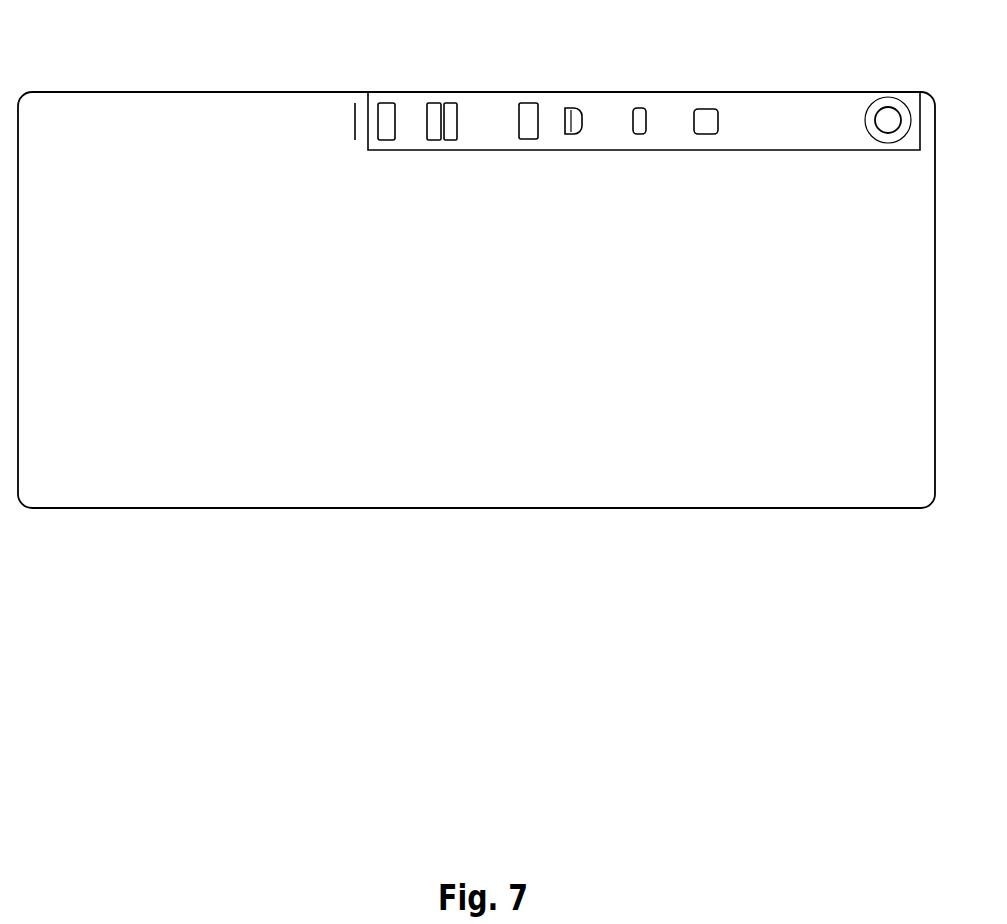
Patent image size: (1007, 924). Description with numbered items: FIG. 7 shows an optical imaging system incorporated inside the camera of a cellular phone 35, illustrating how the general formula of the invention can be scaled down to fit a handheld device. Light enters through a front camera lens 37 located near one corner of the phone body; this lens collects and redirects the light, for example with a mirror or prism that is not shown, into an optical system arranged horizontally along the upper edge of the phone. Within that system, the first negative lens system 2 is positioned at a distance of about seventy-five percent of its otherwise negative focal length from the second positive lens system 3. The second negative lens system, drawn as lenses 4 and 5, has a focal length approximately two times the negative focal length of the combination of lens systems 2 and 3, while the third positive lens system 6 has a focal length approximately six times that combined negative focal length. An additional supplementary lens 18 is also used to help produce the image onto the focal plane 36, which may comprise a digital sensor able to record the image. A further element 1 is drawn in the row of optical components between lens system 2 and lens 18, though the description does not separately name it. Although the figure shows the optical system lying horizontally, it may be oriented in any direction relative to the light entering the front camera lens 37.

The cellular phone 35 is at (449, 329).
The focal plane 36 is at (353, 128).
The third positive lens system 6 is at (387, 117).
The lens 4 is at (433, 112).
The lens 5 is at (450, 112).
The second positive lens system 3 is at (530, 115).
The first negative lens system 2 is at (575, 118).
The port 1 is at (638, 116).
The supplementary lens 18 is at (707, 120).
The front camera lens 37 is at (888, 120).